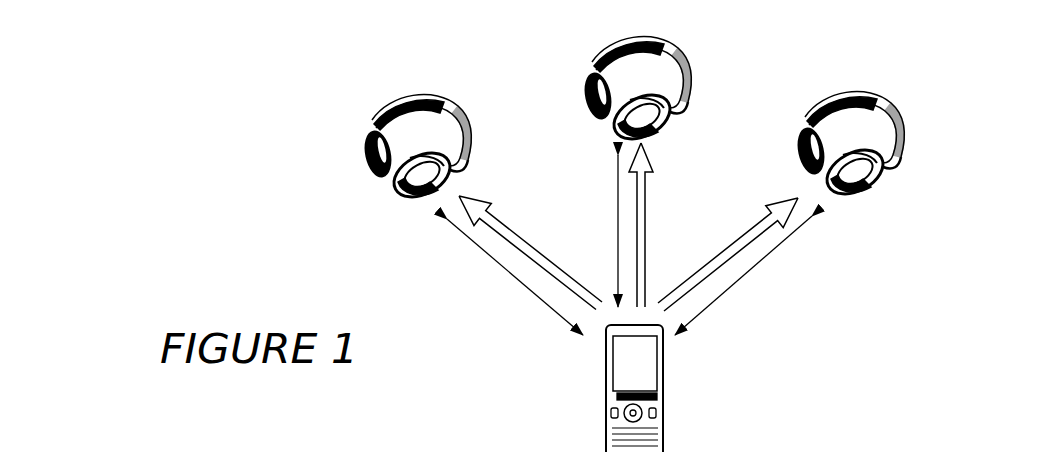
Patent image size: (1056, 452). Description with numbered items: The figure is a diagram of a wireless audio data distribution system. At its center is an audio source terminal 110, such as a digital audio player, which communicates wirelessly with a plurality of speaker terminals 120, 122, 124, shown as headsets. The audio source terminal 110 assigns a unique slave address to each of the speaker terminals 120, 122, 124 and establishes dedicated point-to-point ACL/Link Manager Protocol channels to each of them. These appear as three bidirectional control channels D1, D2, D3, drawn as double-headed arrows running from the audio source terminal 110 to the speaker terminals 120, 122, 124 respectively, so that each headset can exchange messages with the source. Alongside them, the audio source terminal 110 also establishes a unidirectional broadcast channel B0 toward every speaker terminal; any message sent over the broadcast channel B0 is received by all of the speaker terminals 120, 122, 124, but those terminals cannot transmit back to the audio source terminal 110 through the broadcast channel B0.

The audio source terminal 110 is at (607, 386).
The speaker terminal 120 is at (388, 98).
The speaker terminal 122 is at (593, 50).
The speaker terminal 124 is at (905, 123).
The broadcast channel B0 is at (498, 220).
The bidirectional control channel D1 is at (486, 252).
The bidirectional control channel D2 is at (618, 264).
The bidirectional control channel D3 is at (775, 248).